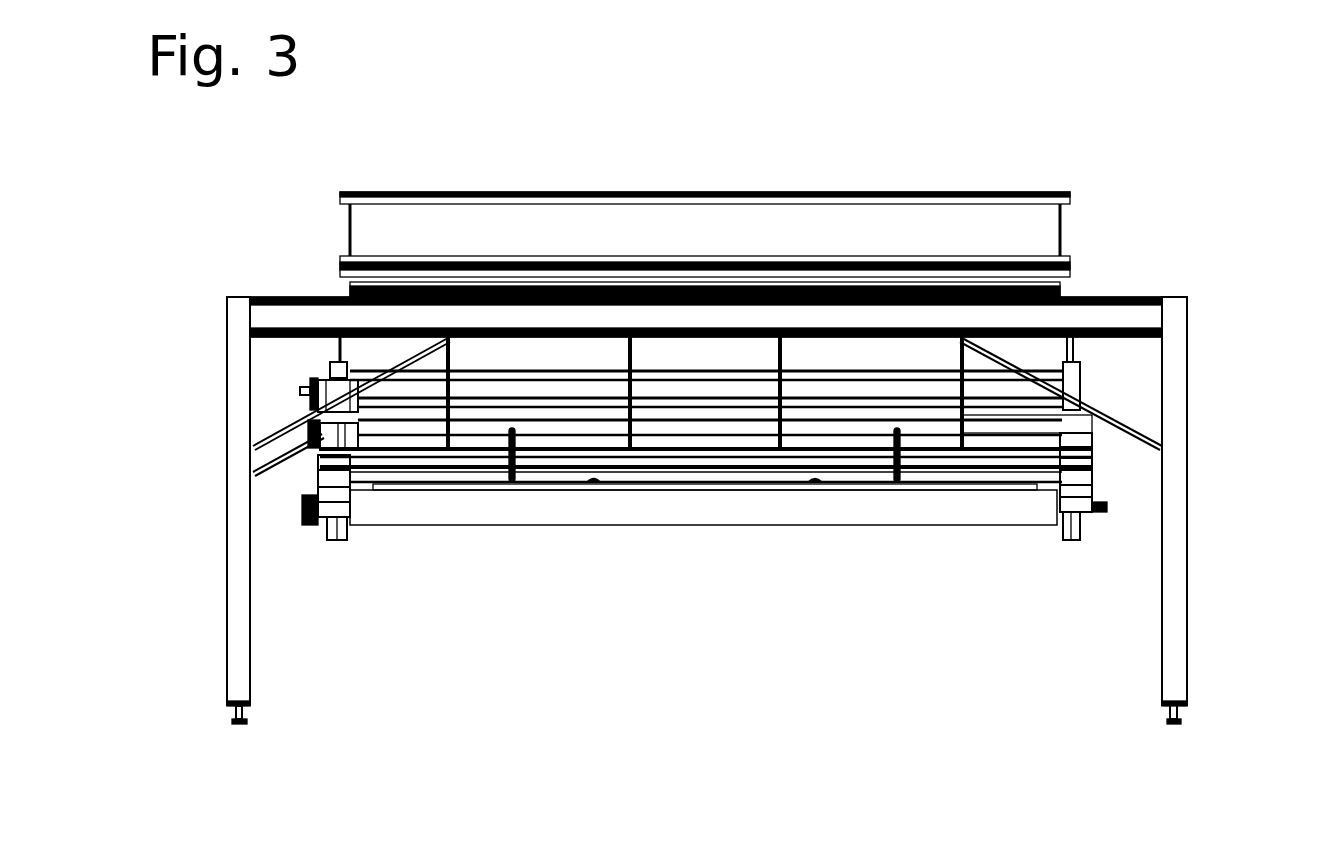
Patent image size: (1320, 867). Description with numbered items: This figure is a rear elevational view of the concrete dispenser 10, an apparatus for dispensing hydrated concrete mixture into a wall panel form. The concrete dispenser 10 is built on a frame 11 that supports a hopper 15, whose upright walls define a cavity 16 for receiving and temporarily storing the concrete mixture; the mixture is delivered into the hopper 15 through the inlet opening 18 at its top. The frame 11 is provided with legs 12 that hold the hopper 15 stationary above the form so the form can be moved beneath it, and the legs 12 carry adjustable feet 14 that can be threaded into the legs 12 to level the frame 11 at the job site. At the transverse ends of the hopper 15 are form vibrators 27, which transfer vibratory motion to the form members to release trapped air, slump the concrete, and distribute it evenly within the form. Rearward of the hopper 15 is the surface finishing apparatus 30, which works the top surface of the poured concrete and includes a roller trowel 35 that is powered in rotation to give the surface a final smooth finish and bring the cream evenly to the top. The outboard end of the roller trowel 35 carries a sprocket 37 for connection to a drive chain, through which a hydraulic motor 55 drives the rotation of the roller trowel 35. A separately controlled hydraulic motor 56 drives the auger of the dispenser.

The concrete dispenser 10 is at (1038, 100).
The frame 11 is at (1130, 295).
The legs 12 is at (233, 630).
The adjustable feet 14 is at (248, 722).
The hopper 15 is at (1070, 193).
The cavity 16 is at (650, 178).
The inlet opening 18 is at (722, 178).
The form vibrators 27 is at (335, 540).
The surface finishing apparatus 30 is at (838, 560).
The roller trowel 35 is at (567, 510).
The sprocket 37 is at (305, 508).
The hydraulic motor 55 is at (310, 440).
The hydraulic motor 56 is at (330, 380).